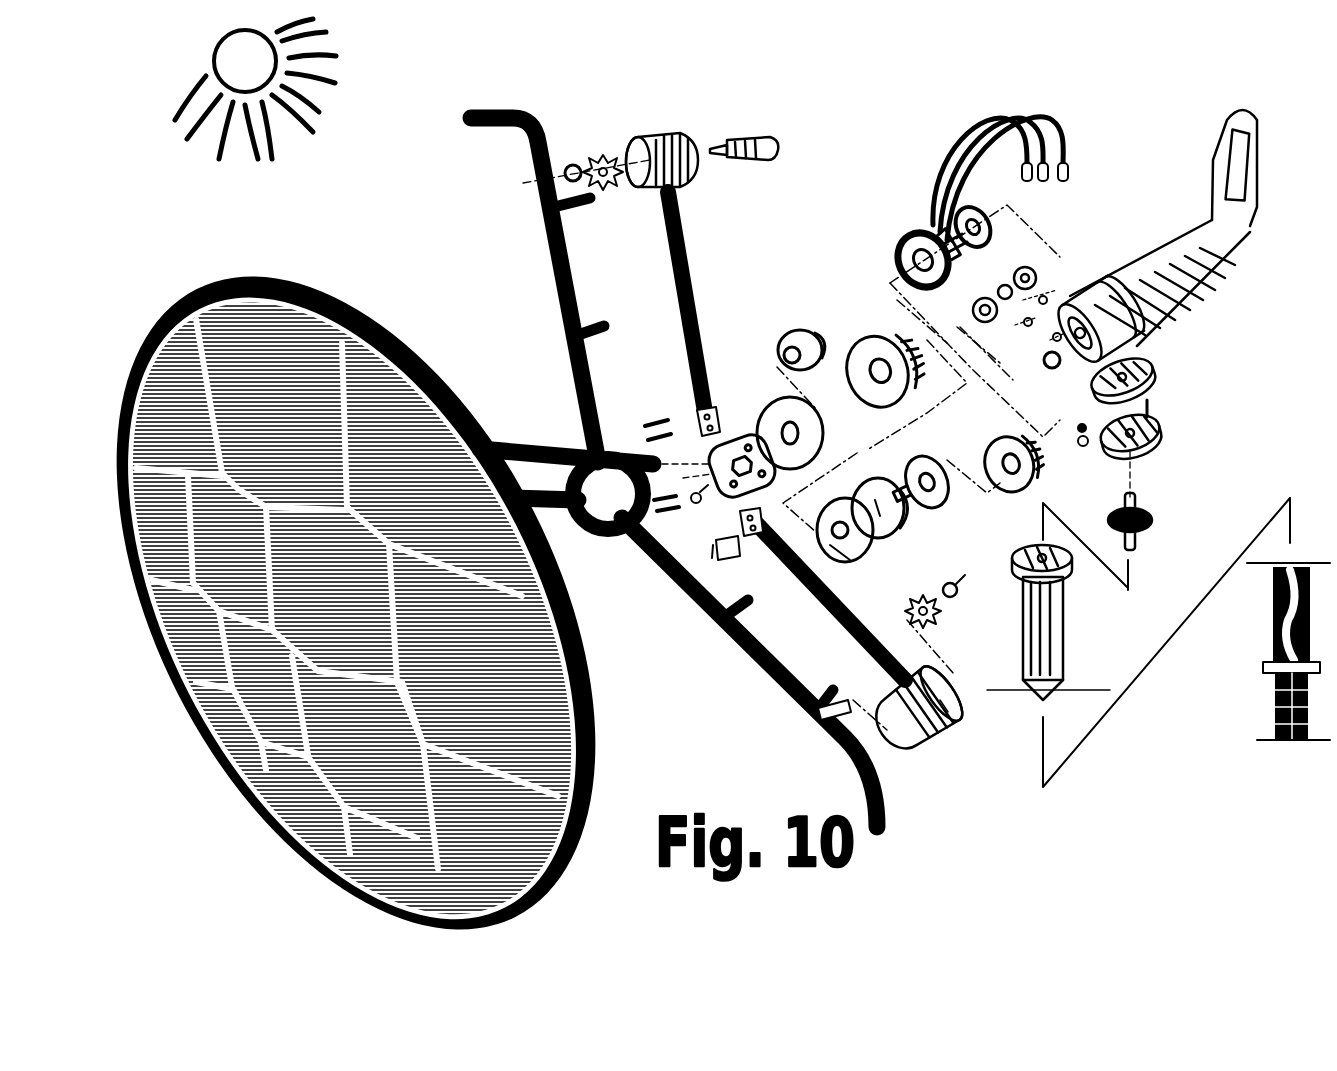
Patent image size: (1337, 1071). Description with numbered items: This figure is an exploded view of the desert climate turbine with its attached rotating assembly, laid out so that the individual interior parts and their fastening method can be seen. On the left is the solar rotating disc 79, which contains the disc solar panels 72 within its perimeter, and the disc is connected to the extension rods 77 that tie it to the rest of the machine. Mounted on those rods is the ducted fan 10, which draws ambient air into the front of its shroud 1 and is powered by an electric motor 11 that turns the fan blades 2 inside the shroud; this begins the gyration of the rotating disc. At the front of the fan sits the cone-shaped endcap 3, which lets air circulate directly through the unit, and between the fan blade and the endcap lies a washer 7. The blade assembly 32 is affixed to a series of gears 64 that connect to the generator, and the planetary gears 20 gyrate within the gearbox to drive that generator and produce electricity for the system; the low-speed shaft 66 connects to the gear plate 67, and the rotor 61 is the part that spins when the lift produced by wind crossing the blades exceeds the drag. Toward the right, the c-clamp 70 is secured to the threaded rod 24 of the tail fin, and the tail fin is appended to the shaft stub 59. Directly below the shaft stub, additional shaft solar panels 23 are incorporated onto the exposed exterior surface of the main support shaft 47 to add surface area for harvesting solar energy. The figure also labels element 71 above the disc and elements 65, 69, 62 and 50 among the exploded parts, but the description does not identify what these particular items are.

The sun 71 is at (220, 160).
The solar rotating disc 79 is at (253, 804).
The disc solar panels 72 is at (206, 693).
The extension rods 77 is at (560, 326).
The ducted fan 10 is at (700, 174).
The washer 7 is at (962, 700).
The shroud 1 is at (640, 186).
The electric motor 11 is at (762, 162).
The blade assembly 32 is at (740, 432).
The motor 65 is at (905, 245).
The rotor 61 is at (990, 232).
The wires 69 is at (935, 158).
The c-clamp 70 is at (1040, 345).
The low-speed shaft 66 is at (897, 482).
The gear plate 67 is at (950, 498).
The planetary gears 20 is at (900, 530).
The series of gears 64 is at (865, 552).
The gear 62 is at (1042, 475).
The fan blade 2 is at (948, 628).
The cone-shaped endcap 3 is at (960, 593).
The handle 50 is at (1212, 226).
The threaded rod 24 is at (1080, 360).
The shaft stub 59 is at (1147, 345).
The main support shaft 47 is at (1270, 612).
The shaft solar panels 23 is at (1275, 722).